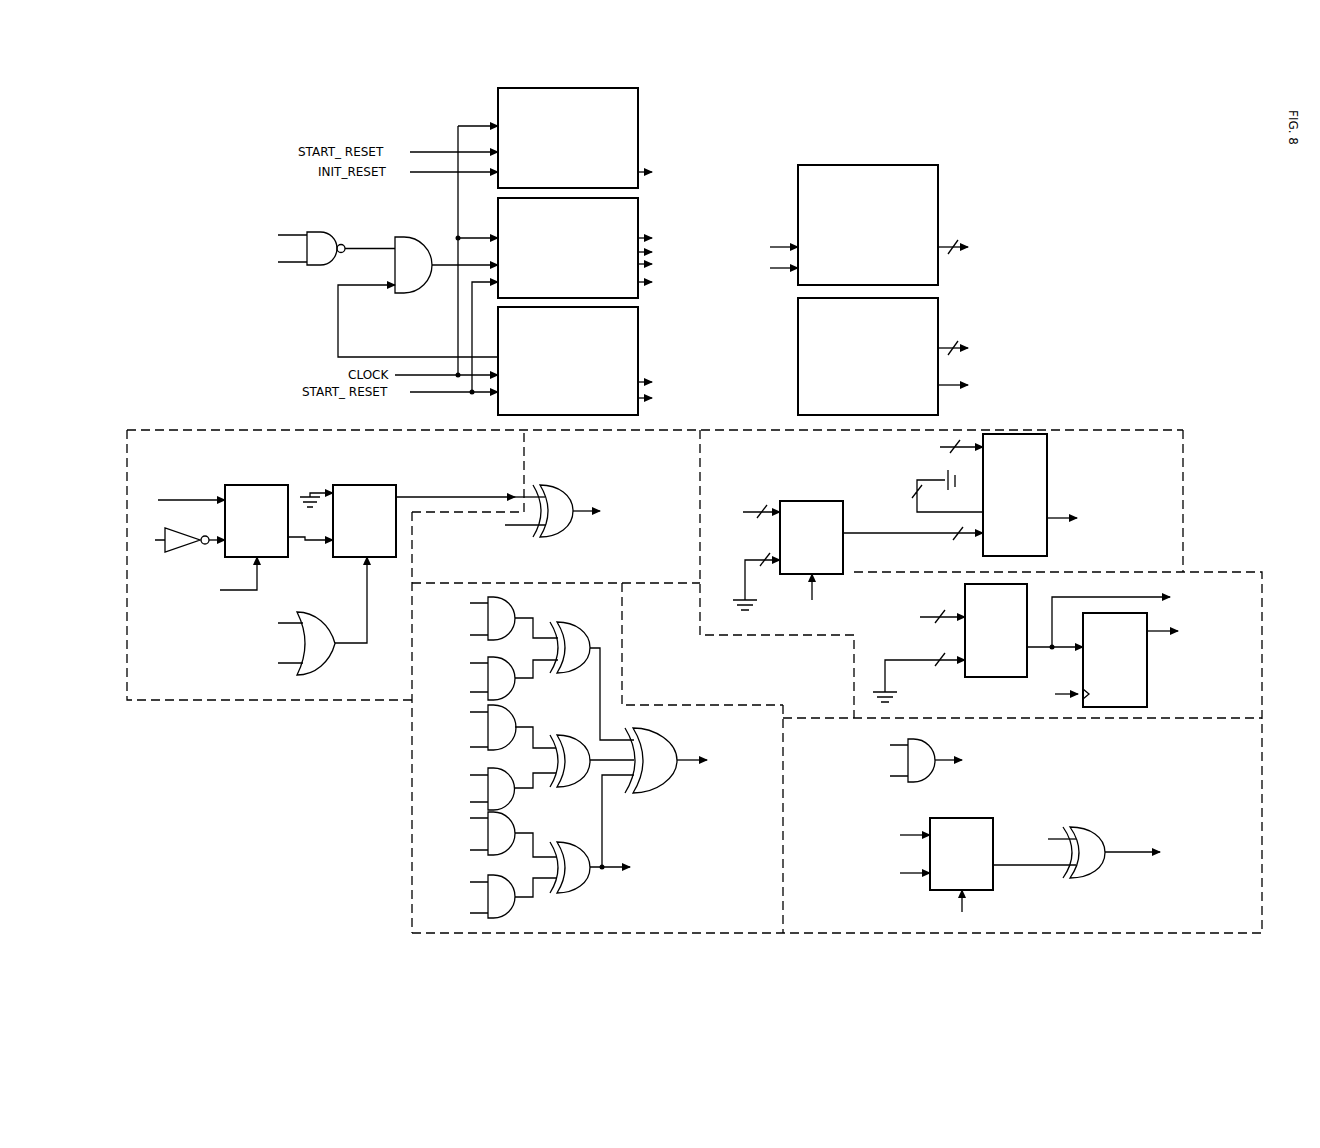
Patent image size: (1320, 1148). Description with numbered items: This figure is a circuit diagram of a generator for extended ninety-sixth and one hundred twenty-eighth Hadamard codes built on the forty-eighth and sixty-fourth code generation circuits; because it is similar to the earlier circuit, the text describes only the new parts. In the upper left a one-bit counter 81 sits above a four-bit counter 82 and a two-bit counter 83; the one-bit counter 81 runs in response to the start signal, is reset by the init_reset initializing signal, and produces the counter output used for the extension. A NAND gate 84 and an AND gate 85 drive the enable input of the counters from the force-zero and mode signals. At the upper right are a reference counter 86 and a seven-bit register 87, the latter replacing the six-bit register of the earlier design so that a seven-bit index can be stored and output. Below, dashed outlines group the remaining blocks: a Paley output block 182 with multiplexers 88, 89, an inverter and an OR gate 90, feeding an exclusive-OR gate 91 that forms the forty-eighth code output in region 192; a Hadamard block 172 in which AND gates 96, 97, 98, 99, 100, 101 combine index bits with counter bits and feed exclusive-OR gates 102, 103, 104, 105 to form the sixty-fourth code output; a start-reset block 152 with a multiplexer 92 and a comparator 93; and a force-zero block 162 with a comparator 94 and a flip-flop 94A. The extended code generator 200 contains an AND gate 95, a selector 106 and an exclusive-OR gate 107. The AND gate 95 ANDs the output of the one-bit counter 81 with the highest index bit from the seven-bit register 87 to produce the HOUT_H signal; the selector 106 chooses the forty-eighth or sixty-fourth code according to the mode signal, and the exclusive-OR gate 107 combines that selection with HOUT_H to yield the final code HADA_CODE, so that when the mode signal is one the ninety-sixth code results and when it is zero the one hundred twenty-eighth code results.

The 1-bit counter 81 is at (638, 105).
The 4-bit counter 82 is at (638, 213).
The 2-bit counter 83 is at (638, 318).
The NAND gate 84 is at (318, 232).
The AND gate 85 is at (415, 237).
The 8-bit reference counter 86 is at (938, 180).
The 7-bit register 87 is at (938, 314).
The multiplexer 88 is at (255, 485).
The multiplexer 89 is at (363, 485).
The inverter / OR gate 90 is at (172, 552).
The XOR gate 91 is at (553, 537).
The multiplexer 92 is at (813, 501).
The comparator 93 is at (1047, 475).
The comparator 94 is at (990, 677).
The D flip-flop 94A is at (1147, 683).
The AND-gate 95 is at (915, 782).
The AND gate 96 is at (513, 640).
The AND gate 97 is at (513, 700).
The AND gate 98 is at (513, 750).
The AND gate 99 is at (513, 810).
The AND gate 100 is at (513, 855).
The AND gate 101 is at (513, 918).
The XOR gate 102 is at (570, 673).
The XOR gate 103 is at (565, 787).
The XOR gate 104 is at (585, 893).
The XOR gate 105 is at (662, 793).
The selector 106 is at (993, 885).
The XOR-gate 107 is at (1082, 878).
The start reset generating circuit 152 is at (1183, 480).
The force zero generating circuit 162 is at (1232, 572).
The Hadamard output circuit 172 is at (700, 705).
The Paley output circuit 182 is at (287, 700).
The HOUT_48 generating circuit 192 is at (665, 583).
The 96th and 128th hadamard code generator 200 is at (1262, 758).